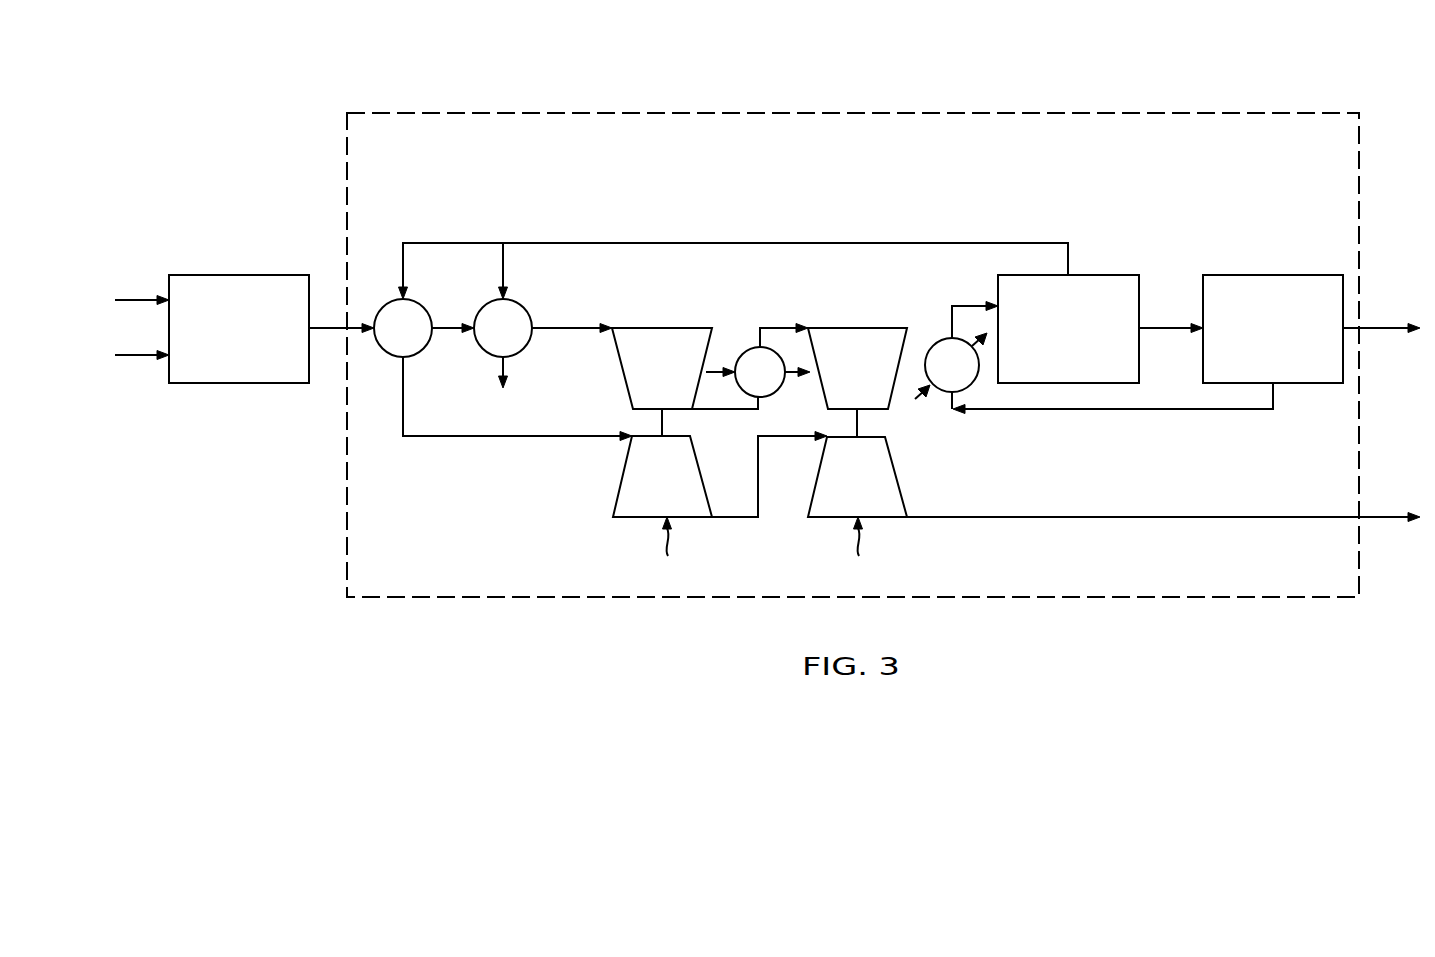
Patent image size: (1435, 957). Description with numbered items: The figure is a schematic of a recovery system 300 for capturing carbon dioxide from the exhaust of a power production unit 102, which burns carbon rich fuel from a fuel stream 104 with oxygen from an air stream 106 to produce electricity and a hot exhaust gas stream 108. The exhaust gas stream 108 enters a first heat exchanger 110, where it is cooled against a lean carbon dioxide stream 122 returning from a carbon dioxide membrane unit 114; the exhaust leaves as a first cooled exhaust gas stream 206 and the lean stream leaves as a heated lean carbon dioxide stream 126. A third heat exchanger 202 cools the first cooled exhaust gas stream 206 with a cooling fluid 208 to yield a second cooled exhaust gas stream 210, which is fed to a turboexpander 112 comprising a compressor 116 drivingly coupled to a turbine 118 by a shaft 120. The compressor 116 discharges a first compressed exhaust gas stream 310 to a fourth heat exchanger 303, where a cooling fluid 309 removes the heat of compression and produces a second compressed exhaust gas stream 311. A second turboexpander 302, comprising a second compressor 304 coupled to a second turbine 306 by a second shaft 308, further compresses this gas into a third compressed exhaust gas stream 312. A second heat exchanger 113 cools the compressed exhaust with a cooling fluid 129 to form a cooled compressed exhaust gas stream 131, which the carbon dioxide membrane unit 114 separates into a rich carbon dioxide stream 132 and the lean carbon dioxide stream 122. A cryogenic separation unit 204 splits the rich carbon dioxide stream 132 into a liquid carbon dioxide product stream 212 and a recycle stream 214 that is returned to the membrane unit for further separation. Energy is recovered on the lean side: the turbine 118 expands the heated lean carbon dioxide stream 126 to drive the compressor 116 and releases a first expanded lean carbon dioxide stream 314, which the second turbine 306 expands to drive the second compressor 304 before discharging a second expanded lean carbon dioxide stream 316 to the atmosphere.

The recovery system 300 is at (562, 102).
The power production unit 102 is at (221, 338).
The fuel stream 104 is at (134, 297).
The air stream 106 is at (130, 359).
The exhaust gas stream 108 is at (327, 325).
The first heat exchanger 110 is at (385, 341).
The third heat exchanger 202 is at (485, 341).
The first cooled exhaust gas stream 206 is at (445, 326).
The cooling fluid 208 is at (500, 293).
The second cooled exhaust gas stream 210 is at (553, 326).
The compressor 116 is at (639, 373).
The turbine 118 is at (639, 493).
The shaft 120 is at (660, 418).
The lean carbon dioxide stream 122 is at (835, 242).
The heated lean carbon dioxide stream 126 is at (463, 438).
The turboexpander 112 is at (668, 548).
The cooling fluid 309 is at (712, 368).
The fourth heat exchanger 303 is at (742, 385).
The first compressed exhaust gas stream 310 is at (723, 412).
The second compressed exhaust gas stream 311 is at (766, 326).
The second compressor 304 is at (839, 373).
The second turbine 306 is at (839, 493).
The second shaft 308 is at (855, 418).
The first expanded lean carbon dioxide stream 314 is at (759, 505).
The second turboexpander 302 is at (858, 550).
The second expanded lean carbon dioxide stream 316 is at (988, 515).
The second heat exchanger 113 is at (934, 378).
The cooling fluid 129 is at (915, 402).
The cooled compressed exhaust gas stream 131 is at (968, 305).
The carbon dioxide membrane unit 114 is at (1050, 338).
The rich carbon dioxide stream 132 is at (1165, 326).
The cryogenic separation unit 204 is at (1255, 338).
The liquid carbon dioxide product stream 212 is at (1395, 326).
The recycle stream 214 is at (1149, 412).
The third compressed exhaust gas stream 312 is at (955, 413).